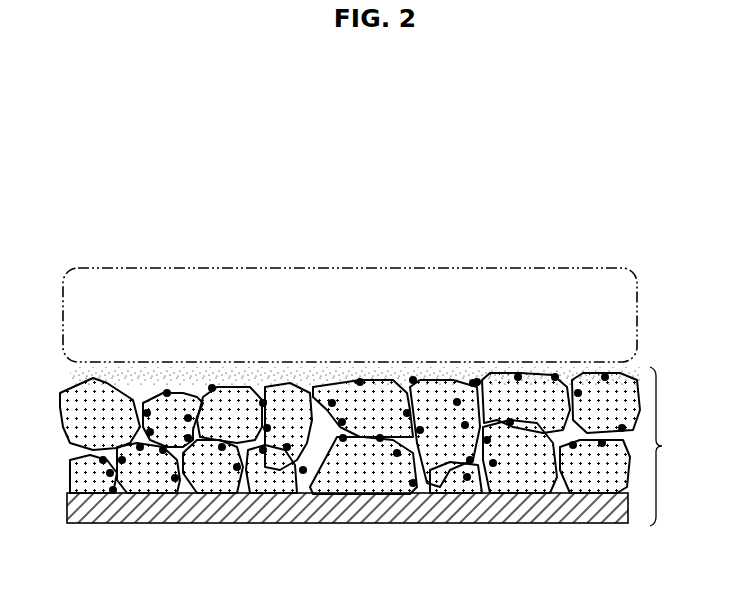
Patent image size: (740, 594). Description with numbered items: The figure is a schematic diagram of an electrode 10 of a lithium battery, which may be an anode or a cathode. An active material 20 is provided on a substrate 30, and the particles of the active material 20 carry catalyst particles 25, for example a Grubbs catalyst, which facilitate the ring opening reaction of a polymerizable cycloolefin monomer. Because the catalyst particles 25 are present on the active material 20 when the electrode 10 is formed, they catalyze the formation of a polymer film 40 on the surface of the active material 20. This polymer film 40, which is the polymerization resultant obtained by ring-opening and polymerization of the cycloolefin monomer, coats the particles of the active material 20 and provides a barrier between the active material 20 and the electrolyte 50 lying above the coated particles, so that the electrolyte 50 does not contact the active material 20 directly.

The electrode 10 is at (374, 447).
The active material 20 is at (490, 388).
The catalyst particles 25 is at (560, 390).
The substrate 30 is at (516, 522).
The polymer film 40 is at (383, 375).
The electrolyte 50 is at (255, 268).